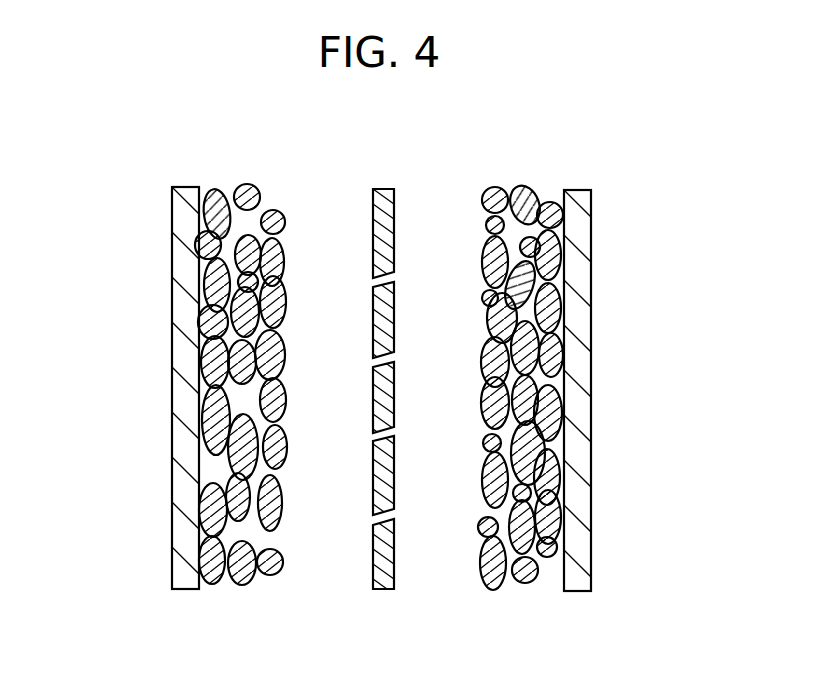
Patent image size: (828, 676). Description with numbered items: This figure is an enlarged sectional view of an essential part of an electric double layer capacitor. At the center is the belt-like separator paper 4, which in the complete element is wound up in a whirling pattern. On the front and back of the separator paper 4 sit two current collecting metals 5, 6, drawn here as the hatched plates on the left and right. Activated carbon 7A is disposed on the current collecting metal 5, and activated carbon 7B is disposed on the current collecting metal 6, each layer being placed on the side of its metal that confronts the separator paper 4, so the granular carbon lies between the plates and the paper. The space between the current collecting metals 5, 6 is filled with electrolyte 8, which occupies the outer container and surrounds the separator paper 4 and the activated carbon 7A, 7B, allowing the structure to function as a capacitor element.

The separator paper 4 is at (385, 188).
The current collecting metal 5 is at (173, 237).
The current collecting metal 6 is at (594, 527).
The activated carbon 7A is at (247, 187).
The activated carbon 7B is at (525, 190).
The electrolyte 8 is at (433, 550).